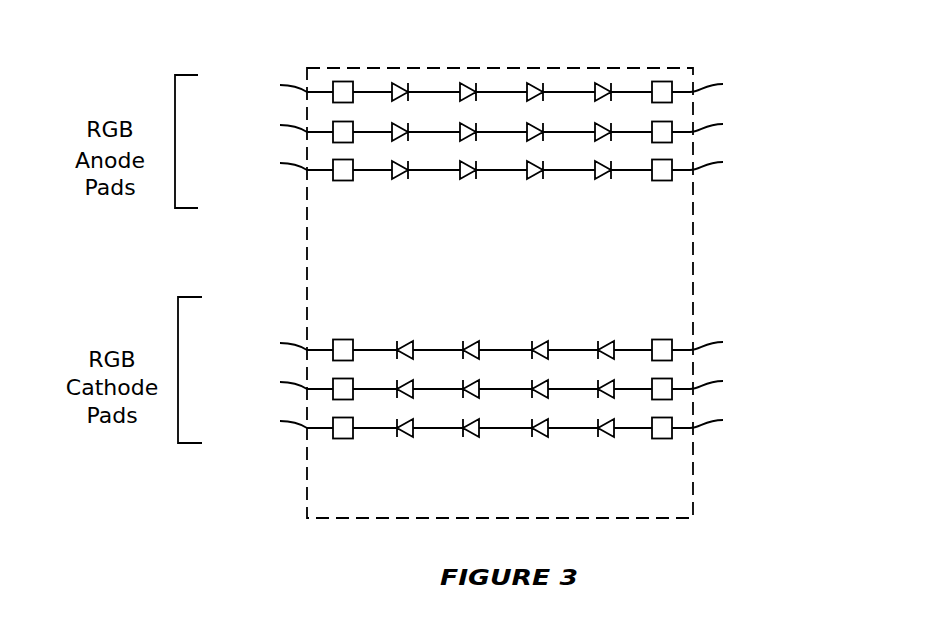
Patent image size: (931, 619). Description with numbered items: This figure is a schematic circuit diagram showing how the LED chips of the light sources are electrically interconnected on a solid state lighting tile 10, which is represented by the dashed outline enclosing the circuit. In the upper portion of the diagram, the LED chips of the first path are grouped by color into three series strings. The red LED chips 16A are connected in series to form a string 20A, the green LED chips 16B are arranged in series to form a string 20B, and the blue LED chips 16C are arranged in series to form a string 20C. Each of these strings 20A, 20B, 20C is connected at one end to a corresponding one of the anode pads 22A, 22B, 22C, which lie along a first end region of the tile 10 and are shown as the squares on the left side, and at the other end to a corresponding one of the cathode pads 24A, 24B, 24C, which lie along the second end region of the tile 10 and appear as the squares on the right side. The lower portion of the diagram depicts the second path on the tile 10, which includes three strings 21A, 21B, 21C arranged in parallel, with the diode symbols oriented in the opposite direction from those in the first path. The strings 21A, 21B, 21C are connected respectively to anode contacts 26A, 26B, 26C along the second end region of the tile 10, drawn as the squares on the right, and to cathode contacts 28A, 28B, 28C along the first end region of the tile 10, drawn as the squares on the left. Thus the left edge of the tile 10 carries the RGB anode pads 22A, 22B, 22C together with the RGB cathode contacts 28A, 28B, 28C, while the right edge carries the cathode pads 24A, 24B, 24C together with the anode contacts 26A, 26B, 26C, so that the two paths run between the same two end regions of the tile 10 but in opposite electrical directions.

The tile 10 is at (307, 294).
The red LED chips 16A is at (398, 84).
The green LED chips 16B is at (400, 124).
The blue LED chips 16C is at (400, 178).
The string 20A is at (513, 92).
The string 20B is at (557, 132).
The string 20C is at (585, 171).
The string 21A is at (518, 428).
The string 21B is at (451, 389).
The string 21C is at (437, 350).
The anode pad 22A is at (291, 88).
The anode pad 22B is at (291, 128).
The anode pad 22C is at (291, 166).
The cathode pad 24A is at (713, 87).
The cathode pad 24B is at (713, 127).
The cathode pad 24C is at (713, 165).
The anode contact 26A is at (713, 345).
The anode contact 26B is at (713, 384).
The anode contact 26C is at (713, 423).
The cathode contact 28A is at (291, 424).
The cathode contact 28B is at (291, 385).
The cathode contact 28C is at (291, 346).